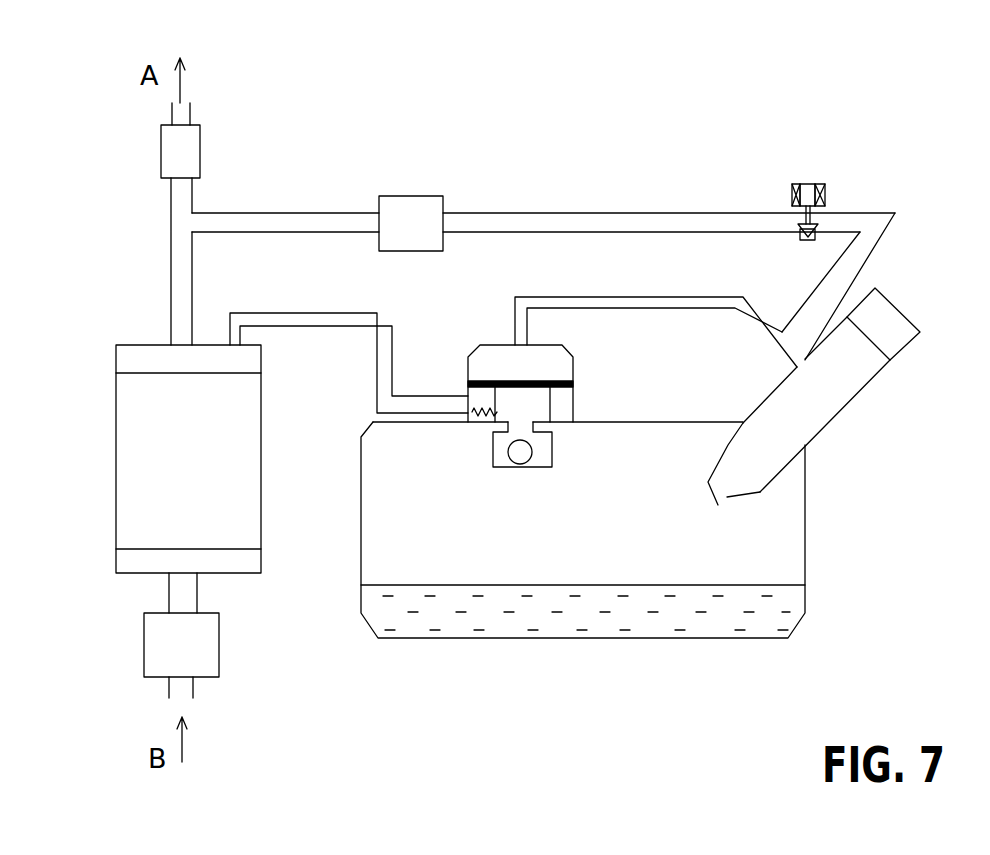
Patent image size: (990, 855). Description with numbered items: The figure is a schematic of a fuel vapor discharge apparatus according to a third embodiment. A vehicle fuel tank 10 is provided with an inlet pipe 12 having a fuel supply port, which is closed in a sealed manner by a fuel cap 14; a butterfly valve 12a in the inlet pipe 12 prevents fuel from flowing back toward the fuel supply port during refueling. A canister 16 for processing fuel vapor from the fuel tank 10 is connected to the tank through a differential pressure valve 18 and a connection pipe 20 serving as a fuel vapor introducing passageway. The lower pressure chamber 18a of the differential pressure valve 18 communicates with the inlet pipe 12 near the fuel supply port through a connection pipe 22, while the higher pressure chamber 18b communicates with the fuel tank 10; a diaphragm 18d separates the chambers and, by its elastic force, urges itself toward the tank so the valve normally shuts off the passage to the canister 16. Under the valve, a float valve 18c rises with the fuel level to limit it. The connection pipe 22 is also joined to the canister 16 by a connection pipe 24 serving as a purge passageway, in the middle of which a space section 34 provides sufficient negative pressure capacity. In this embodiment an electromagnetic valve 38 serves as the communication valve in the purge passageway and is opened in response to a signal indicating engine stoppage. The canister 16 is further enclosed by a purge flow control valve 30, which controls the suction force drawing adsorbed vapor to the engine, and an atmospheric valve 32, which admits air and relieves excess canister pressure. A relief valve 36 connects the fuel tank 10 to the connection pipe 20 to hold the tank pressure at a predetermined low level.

The vehicle fuel tank 10 is at (672, 659).
The inlet pipe 12 is at (808, 409).
The butterfly valve 12a is at (708, 492).
The fuel cap 14 is at (913, 343).
The canister 16 is at (116, 510).
The differential pressure valve 18 is at (526, 397).
The lower pressure chamber 18a is at (545, 357).
The higher pressure chamber 18b is at (533, 403).
The float valve 18c is at (549, 476).
The diaphragm 18d is at (555, 380).
The connection pipe 20 is at (325, 313).
The connection pipe 22 is at (620, 297).
The connection pipe 24 is at (612, 213).
The purge flow control valve 30 is at (200, 135).
The atmospheric valve 32 is at (144, 638).
The space section 34 is at (415, 196).
The relief valve 36 is at (488, 402).
The electromagnetic valve 38 is at (833, 167).